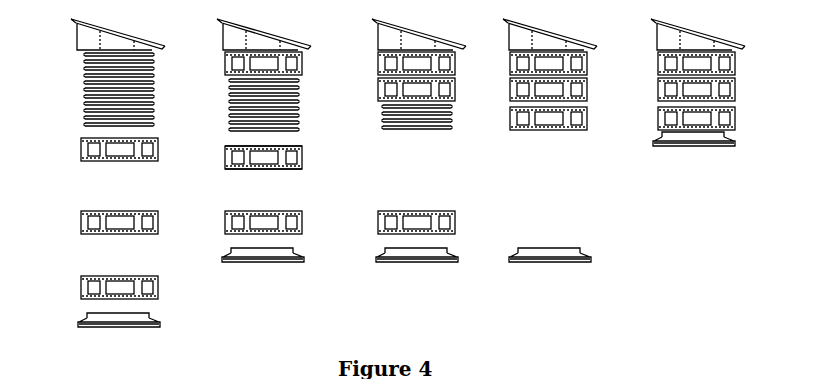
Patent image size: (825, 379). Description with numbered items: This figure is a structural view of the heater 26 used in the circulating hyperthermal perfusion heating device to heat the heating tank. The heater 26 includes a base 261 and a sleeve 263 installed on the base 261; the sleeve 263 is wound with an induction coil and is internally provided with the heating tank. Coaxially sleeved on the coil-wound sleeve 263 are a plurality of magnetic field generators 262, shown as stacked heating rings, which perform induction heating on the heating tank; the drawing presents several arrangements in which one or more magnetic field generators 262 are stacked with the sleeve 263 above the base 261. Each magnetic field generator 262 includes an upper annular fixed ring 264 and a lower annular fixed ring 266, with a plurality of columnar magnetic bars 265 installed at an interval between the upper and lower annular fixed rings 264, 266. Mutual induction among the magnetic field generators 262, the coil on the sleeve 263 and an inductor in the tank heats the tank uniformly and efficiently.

The heater 26 is at (737, 92).
The base 261 is at (70, 323).
The magnetic field generator 262 is at (70, 150).
The sleeve 263 is at (73, 86).
The upper annular fixed ring 264 is at (228, 147).
The columnar magnetic bar 265 is at (232, 158).
The lower annular fixed ring 266 is at (226, 170).